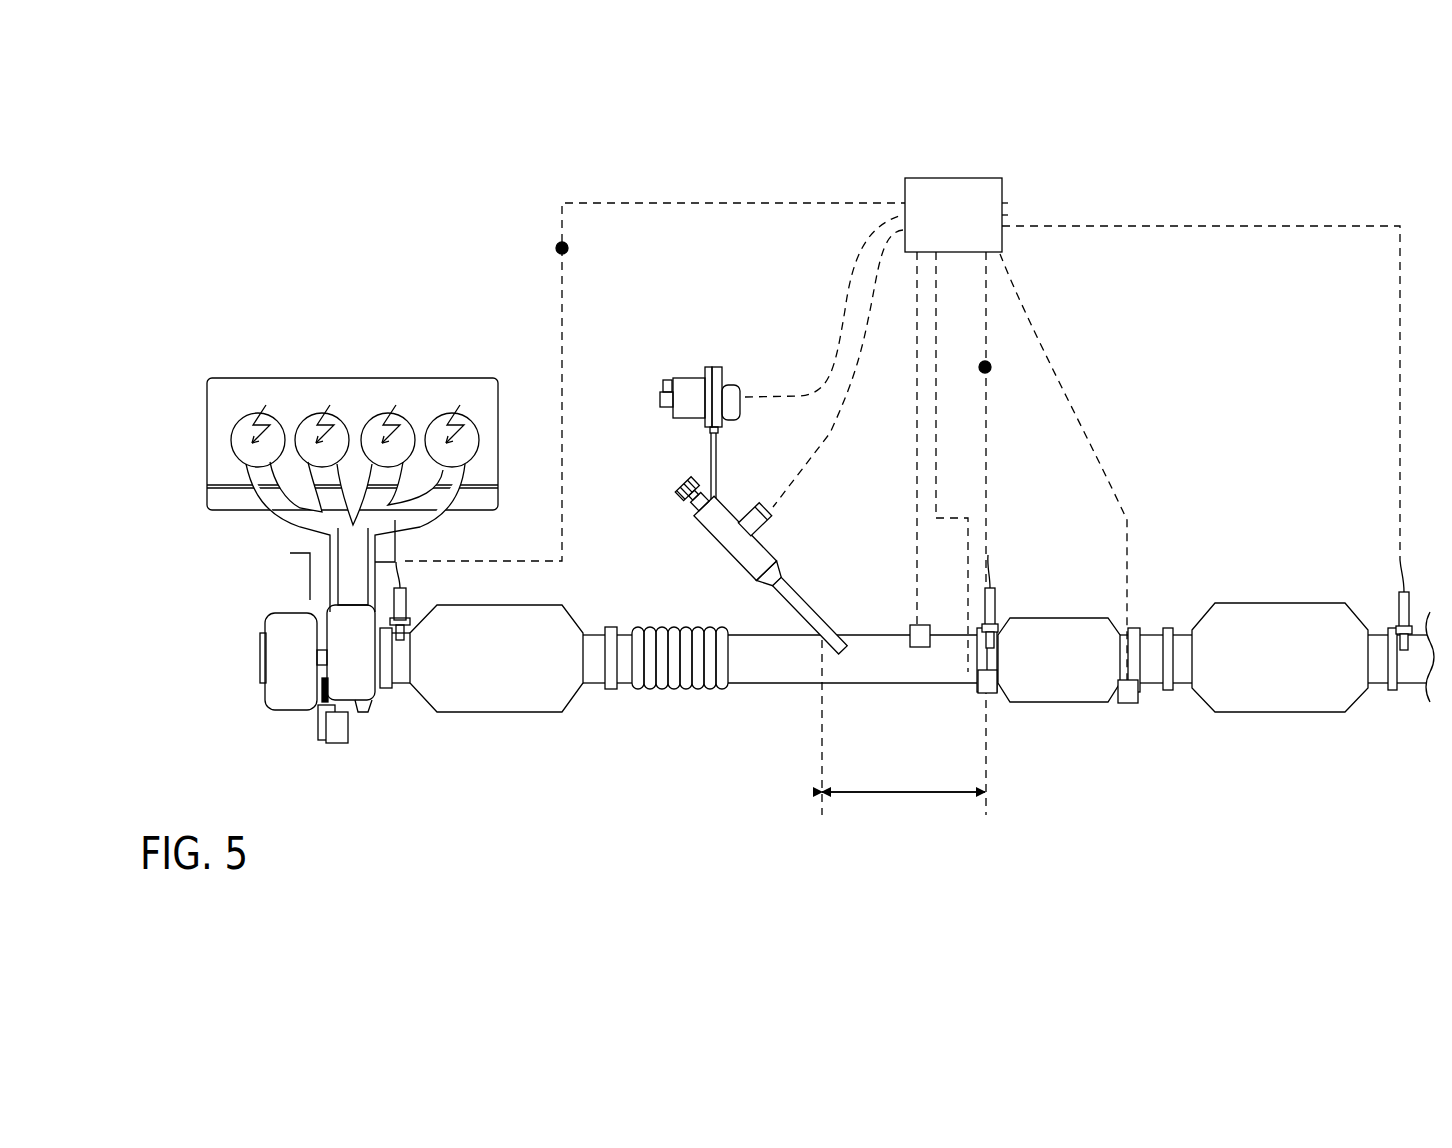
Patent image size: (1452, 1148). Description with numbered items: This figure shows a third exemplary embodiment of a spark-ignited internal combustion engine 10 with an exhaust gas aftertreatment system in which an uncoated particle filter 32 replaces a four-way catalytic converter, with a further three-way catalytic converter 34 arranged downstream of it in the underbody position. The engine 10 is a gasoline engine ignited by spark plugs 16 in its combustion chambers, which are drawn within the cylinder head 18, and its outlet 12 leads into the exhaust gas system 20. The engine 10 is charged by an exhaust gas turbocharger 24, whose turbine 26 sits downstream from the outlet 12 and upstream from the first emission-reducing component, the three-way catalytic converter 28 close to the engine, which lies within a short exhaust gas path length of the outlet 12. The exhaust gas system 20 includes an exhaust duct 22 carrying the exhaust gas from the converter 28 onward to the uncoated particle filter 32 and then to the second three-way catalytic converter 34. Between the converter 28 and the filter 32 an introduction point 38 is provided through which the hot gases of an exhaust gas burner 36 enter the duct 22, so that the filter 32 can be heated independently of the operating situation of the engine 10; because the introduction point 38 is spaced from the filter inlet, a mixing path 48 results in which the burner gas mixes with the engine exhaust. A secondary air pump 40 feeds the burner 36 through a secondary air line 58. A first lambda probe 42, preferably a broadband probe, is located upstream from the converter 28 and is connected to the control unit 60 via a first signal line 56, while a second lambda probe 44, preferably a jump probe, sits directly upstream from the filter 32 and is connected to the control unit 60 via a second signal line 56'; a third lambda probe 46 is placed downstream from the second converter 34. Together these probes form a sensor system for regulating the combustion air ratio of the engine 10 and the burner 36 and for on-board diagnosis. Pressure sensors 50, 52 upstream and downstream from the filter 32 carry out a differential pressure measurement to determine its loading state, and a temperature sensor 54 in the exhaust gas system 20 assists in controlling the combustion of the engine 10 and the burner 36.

The internal combustion engine 10 is at (217, 380).
The outlet 12 is at (353, 535).
The spark plug 16 is at (238, 430).
The cylinder head 18 is at (457, 508).
The exhaust gas system 20 is at (1200, 480).
The exhaust duct 22 is at (765, 672).
The exhaust gas turbocharger 24 is at (300, 742).
The turbine 26 is at (362, 715).
The three-way catalytic converter close to the engine 28 is at (497, 712).
The uncoated particle filter 32 is at (1035, 693).
The second three-way catalytic converter 34 is at (1277, 712).
The exhaust gas burner 36 is at (758, 548).
The introduction point 38 is at (828, 635).
The secondary air pump 40 is at (700, 378).
The first lambda probe 42 is at (402, 607).
The second lambda probe 44 is at (992, 607).
The third lambda probe 46 is at (1400, 605).
The mixing path 48 is at (903, 776).
The first pressure sensor 50 is at (990, 695).
The second pressure sensor 52 is at (1130, 700).
The temperature sensor 54 is at (912, 630).
The signal line 56 is at (902, 441).
The second signal line 56' is at (965, 533).
The air line 58 is at (715, 470).
The control unit 60 is at (993, 190).